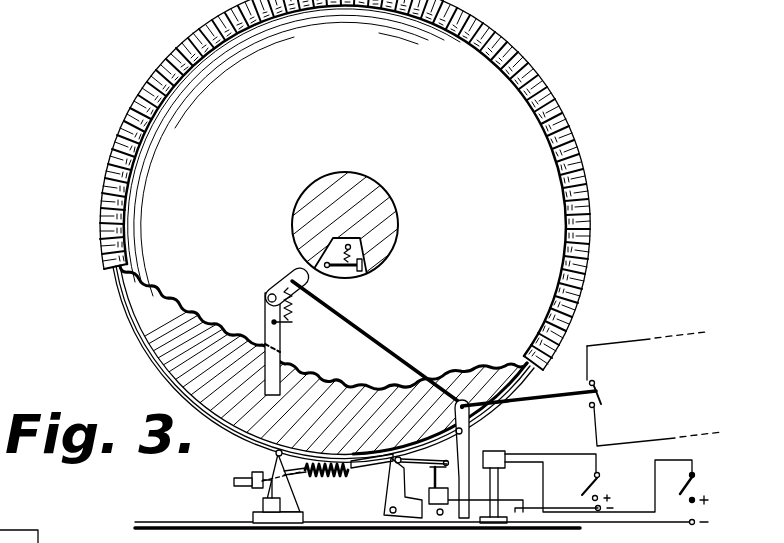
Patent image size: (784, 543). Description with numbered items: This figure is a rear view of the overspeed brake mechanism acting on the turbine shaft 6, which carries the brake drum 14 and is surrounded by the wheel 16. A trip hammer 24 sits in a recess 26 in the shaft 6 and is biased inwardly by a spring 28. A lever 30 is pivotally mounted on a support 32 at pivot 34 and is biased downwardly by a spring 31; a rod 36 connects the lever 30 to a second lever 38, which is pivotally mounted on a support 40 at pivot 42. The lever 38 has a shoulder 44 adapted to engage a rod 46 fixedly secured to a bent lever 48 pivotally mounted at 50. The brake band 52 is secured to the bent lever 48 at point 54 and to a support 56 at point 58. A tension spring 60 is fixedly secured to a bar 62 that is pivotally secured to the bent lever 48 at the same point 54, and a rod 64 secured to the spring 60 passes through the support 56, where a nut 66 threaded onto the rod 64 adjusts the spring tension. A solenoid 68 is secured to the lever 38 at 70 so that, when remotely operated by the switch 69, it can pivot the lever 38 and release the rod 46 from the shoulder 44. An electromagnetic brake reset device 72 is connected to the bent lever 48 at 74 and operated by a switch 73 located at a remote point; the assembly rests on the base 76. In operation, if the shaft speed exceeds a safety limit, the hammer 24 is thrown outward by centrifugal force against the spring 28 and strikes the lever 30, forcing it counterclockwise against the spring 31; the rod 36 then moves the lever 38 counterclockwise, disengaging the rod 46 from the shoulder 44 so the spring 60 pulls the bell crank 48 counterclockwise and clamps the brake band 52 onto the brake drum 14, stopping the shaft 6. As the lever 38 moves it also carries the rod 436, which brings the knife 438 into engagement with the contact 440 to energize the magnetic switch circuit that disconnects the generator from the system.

The shaft 6 is at (372, 182).
The brake drum 14 is at (41, 536).
The wheel 16 is at (547, 80).
The trip hammer 24 is at (365, 274).
The recess 26 is at (338, 273).
The spring 28 is at (362, 250).
The lever 30 is at (282, 284).
The spring 31 is at (292, 320).
The support 32 is at (276, 352).
The pivot 34 is at (268, 298).
The rod 36 is at (403, 365).
The lever 38 is at (467, 444).
The support 40 is at (455, 508).
The pivot 42 is at (467, 431).
The shoulder 44 is at (422, 464).
The rod 46 is at (570, 483).
The bent lever 48 is at (393, 485).
The pivot 50 is at (398, 522).
The brake band 52 is at (156, 360).
The connection point 54 is at (390, 463).
The support 56 is at (258, 487).
The connection point 58 is at (275, 452).
The tension spring 60 is at (317, 478).
The bar 62 is at (355, 466).
The rod 64 is at (242, 478).
The nut 66 is at (258, 489).
The solenoid 68 is at (497, 456).
The switch 69 is at (600, 486).
The connection point 70 is at (487, 495).
The electromagnetic brake reset device 72 is at (423, 499).
The switch 73 is at (700, 472).
The connection point 74 is at (429, 479).
The base 76 is at (412, 532).
The rod 436 is at (524, 400).
The knife 438 is at (596, 388).
The contact 440 is at (590, 408).